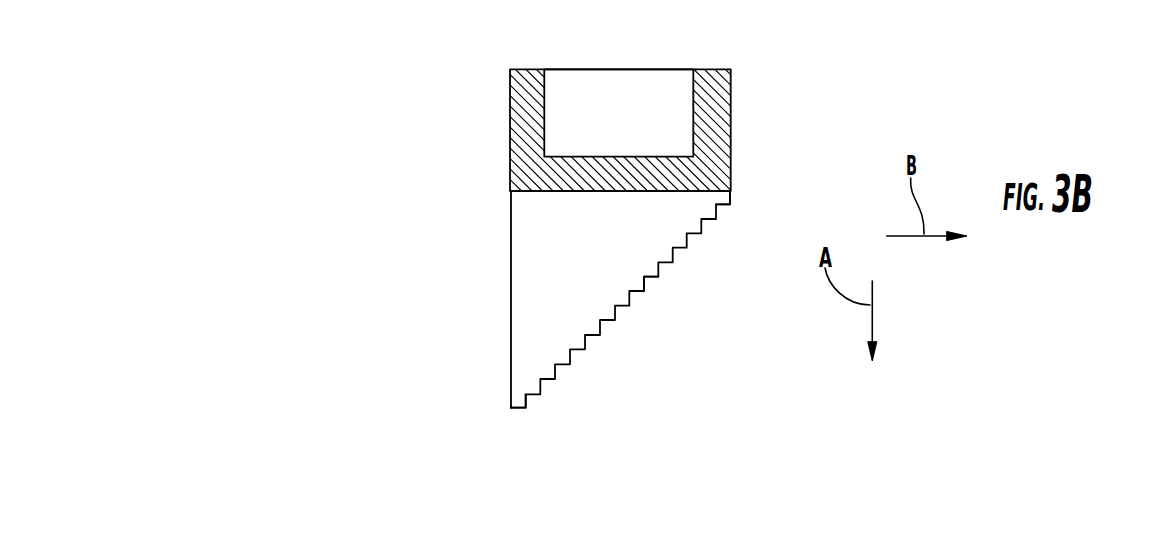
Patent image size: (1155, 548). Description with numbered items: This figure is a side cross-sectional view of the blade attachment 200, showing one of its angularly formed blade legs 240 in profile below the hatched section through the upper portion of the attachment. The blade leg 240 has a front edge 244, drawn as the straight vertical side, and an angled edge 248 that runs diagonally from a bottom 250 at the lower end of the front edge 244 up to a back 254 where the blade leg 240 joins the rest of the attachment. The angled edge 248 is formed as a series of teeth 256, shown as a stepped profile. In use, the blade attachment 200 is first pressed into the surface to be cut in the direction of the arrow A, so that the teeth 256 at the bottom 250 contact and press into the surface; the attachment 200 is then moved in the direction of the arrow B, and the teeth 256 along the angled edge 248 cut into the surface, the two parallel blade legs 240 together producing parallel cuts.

The blade attachment 200 is at (643, 206).
The angularly formed blade leg 240 is at (552, 216).
The front edge 244 is at (517, 318).
The angled edge 248 is at (644, 285).
The bottom 250 is at (510, 405).
The back 254 is at (732, 205).
The teeth 256 is at (577, 349).